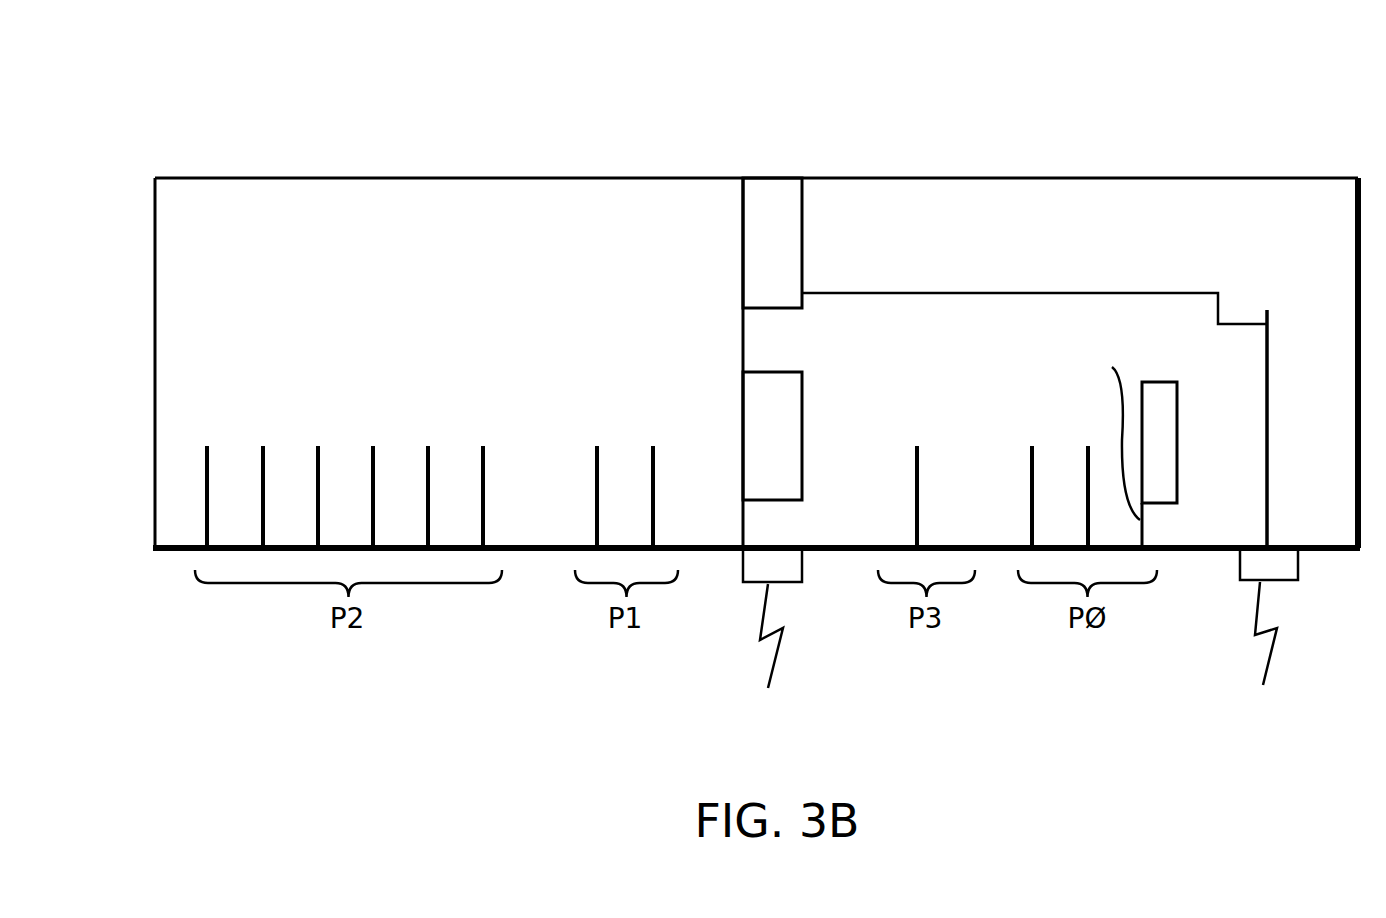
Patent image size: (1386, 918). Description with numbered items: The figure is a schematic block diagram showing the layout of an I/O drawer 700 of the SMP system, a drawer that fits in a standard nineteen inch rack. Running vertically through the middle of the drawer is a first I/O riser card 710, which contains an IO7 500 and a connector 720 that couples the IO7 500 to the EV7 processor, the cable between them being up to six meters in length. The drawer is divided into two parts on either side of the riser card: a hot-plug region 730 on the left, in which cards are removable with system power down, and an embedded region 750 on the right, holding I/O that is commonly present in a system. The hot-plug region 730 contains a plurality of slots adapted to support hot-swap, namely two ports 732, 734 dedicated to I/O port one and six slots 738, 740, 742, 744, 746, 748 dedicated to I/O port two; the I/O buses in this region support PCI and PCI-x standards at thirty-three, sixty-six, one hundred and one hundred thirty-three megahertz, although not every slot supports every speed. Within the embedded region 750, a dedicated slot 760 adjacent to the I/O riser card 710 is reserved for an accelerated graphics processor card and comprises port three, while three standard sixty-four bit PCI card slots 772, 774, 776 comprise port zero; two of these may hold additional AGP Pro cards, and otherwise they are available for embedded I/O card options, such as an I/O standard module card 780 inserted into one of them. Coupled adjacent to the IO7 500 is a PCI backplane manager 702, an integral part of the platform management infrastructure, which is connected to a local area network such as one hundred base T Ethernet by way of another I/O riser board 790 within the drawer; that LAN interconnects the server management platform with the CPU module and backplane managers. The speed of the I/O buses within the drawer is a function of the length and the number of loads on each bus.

The I/O drawer 700 is at (126, 135).
The PCI backplane manager 702 is at (802, 235).
The first I/O riser card 710 is at (742, 336).
The IO7 500 is at (802, 432).
The connector 720 is at (802, 575).
The hot-plug region 730 is at (430, 294).
The port 732 is at (596, 446).
The port 734 is at (652, 446).
The slot 738 is at (206, 446).
The slot 740 is at (262, 446).
The slot 742 is at (317, 446).
The slot 744 is at (372, 446).
The slot 746 is at (427, 446).
The slot 748 is at (482, 446).
The embedded region 750 is at (1035, 274).
The dedicated slot 760 is at (916, 446).
The PCI card slot 772 is at (1031, 446).
The PCI card slot 774 is at (1087, 446).
The PCI card slot 776 is at (1101, 432).
The I/O standard module card 780 is at (1166, 403).
The I/O riser board 790 is at (1268, 400).